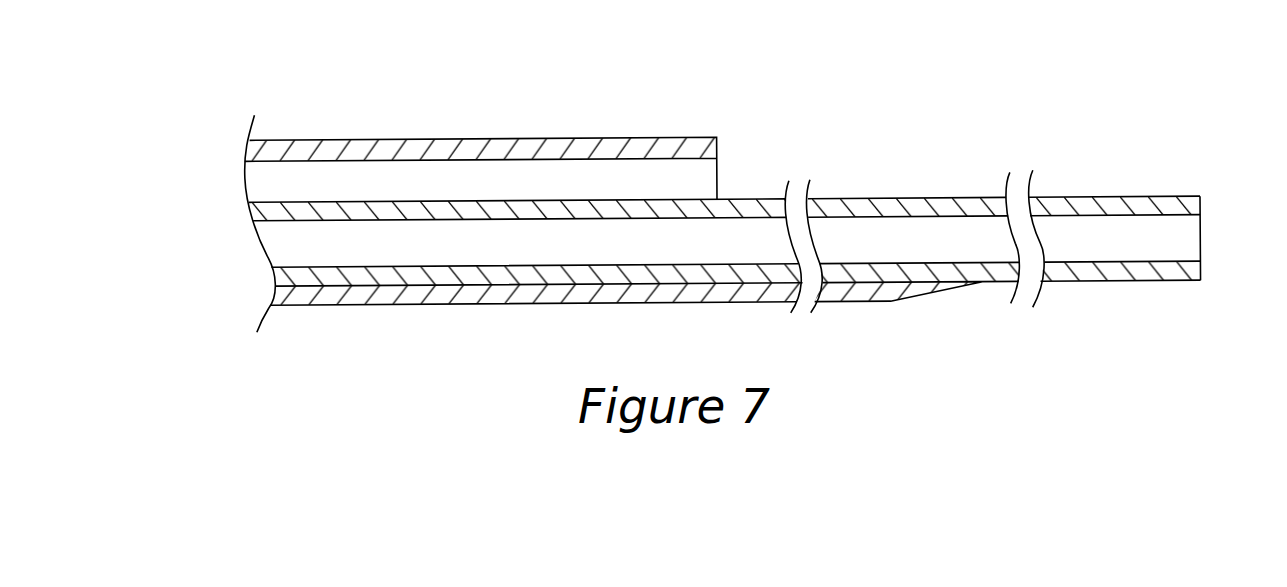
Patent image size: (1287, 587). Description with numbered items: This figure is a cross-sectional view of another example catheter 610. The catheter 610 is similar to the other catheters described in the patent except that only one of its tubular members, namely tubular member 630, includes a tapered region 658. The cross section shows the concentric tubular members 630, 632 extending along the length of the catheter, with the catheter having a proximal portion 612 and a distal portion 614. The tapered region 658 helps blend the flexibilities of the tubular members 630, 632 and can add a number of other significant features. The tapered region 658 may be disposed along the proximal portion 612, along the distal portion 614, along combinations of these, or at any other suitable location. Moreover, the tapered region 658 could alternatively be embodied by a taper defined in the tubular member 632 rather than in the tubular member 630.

The catheter 610 is at (523, 111).
The proximal portion 612 is at (315, 96).
The distal portion 614 is at (1079, 177).
The tubular member 630 is at (280, 147).
The tubular member 632 is at (905, 197).
The tapered region 658 is at (940, 292).